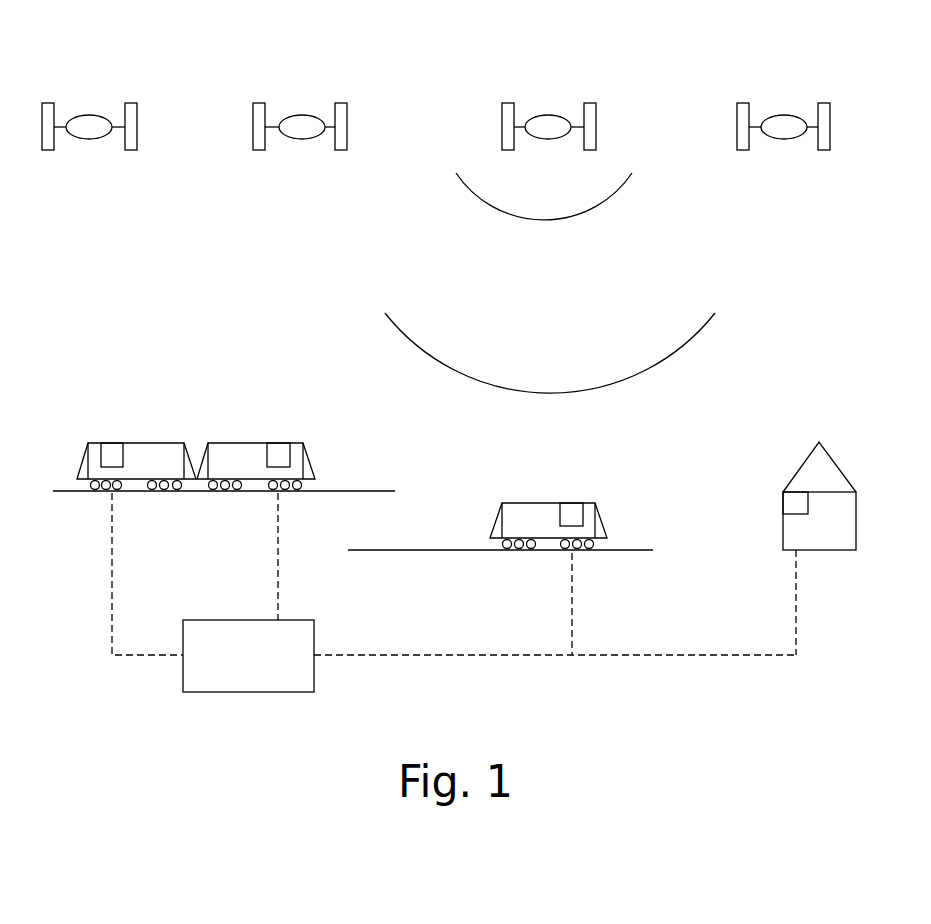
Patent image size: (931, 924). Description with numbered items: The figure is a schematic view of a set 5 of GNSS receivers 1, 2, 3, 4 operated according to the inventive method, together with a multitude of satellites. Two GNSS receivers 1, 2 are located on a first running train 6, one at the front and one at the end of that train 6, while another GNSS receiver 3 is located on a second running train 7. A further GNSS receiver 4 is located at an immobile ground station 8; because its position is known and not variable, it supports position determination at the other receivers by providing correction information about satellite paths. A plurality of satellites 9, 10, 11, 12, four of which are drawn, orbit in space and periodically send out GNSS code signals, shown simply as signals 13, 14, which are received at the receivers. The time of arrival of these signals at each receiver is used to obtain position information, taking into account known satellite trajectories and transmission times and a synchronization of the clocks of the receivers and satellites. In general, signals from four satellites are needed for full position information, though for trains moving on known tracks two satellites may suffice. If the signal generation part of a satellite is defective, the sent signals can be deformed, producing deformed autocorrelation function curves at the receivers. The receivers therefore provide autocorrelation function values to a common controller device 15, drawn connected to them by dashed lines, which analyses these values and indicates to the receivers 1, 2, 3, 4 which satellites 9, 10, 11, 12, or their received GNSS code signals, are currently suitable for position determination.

The GNSS receiver 1 is at (112, 453).
The GNSS receiver 2 is at (278, 453).
The GNSS receiver 3 is at (572, 512).
The GNSS receiver 4 is at (795, 503).
The set of GNSS receivers 5 is at (454, 625).
The first running train 6 is at (224, 423).
The second running train 7 is at (500, 493).
The immobile ground station 8 is at (793, 457).
The satellite 9 is at (88, 127).
The satellite 10 is at (302, 113).
The satellite 11 is at (547, 125).
The satellite 12 is at (783, 115).
The signal 13 is at (608, 200).
The signal 14 is at (690, 343).
The common controller device 15 is at (265, 672).